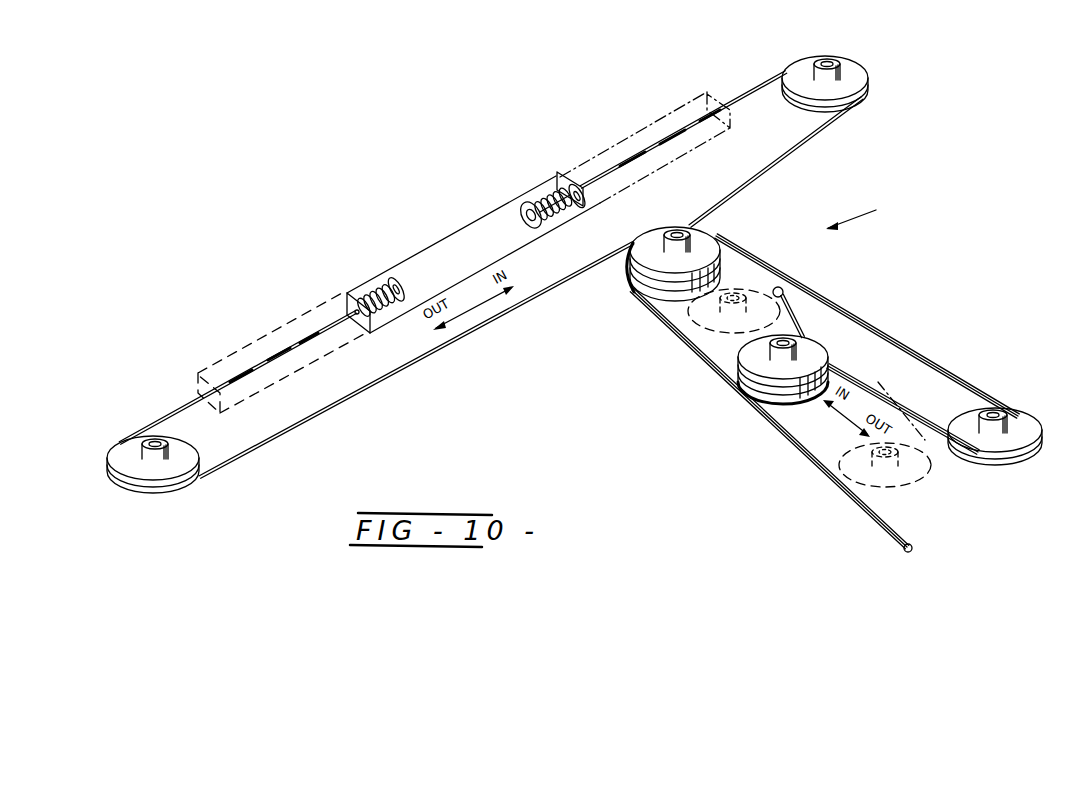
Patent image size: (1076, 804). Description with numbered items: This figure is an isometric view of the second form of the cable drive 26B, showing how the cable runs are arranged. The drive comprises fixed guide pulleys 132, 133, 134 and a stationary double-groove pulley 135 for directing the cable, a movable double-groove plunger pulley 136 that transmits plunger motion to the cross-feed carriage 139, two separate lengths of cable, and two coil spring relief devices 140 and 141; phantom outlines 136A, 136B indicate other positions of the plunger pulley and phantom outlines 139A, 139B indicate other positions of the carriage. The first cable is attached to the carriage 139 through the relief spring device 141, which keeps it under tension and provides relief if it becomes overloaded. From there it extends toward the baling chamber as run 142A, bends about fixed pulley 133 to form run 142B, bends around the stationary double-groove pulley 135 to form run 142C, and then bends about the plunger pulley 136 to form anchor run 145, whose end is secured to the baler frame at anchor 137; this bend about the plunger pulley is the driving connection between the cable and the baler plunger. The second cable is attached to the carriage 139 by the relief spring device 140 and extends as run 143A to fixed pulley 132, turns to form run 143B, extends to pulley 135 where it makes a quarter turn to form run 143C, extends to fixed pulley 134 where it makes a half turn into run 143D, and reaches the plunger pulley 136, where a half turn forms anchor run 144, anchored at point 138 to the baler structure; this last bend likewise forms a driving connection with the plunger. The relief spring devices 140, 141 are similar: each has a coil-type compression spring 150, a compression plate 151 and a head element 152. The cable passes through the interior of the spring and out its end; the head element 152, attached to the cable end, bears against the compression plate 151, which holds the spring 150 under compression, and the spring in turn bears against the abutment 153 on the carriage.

The cable drive 26B is at (874, 214).
The fixed guide pulley 132 is at (151, 480).
The fixed guide pulley 133 is at (857, 74).
The fixed guide pulley 134 is at (1027, 422).
The stationary double-groove pulley 135 is at (634, 264).
The movable double-groove plunger pulley 136 is at (748, 362).
The phantom position of movable pulley 136A is at (686, 318).
The phantom position of movable pulley 136B is at (845, 474).
The anchor 137 is at (785, 289).
The anchor point 138 is at (904, 550).
The cross-feed carriage 139 is at (467, 226).
The phantom position of connecting bar 139A is at (262, 340).
The phantom position of connecting bar 139B is at (640, 130).
The relief spring device 140 is at (379, 283).
The relief spring device 141 is at (555, 184).
The cable run 142A is at (757, 86).
The cable run 142B is at (773, 165).
The cable run 142C is at (652, 300).
The cable run 143A is at (188, 403).
The cable run 143B is at (444, 347).
The cable run 143C is at (888, 334).
The cable run 143D is at (891, 400).
The anchor run 144 is at (783, 427).
The anchor run 145 is at (794, 312).
The coil-type compression spring 150 is at (560, 215).
The compression plate 151 is at (542, 224).
The head element 152 is at (532, 224).
The abutment 153 is at (582, 205).